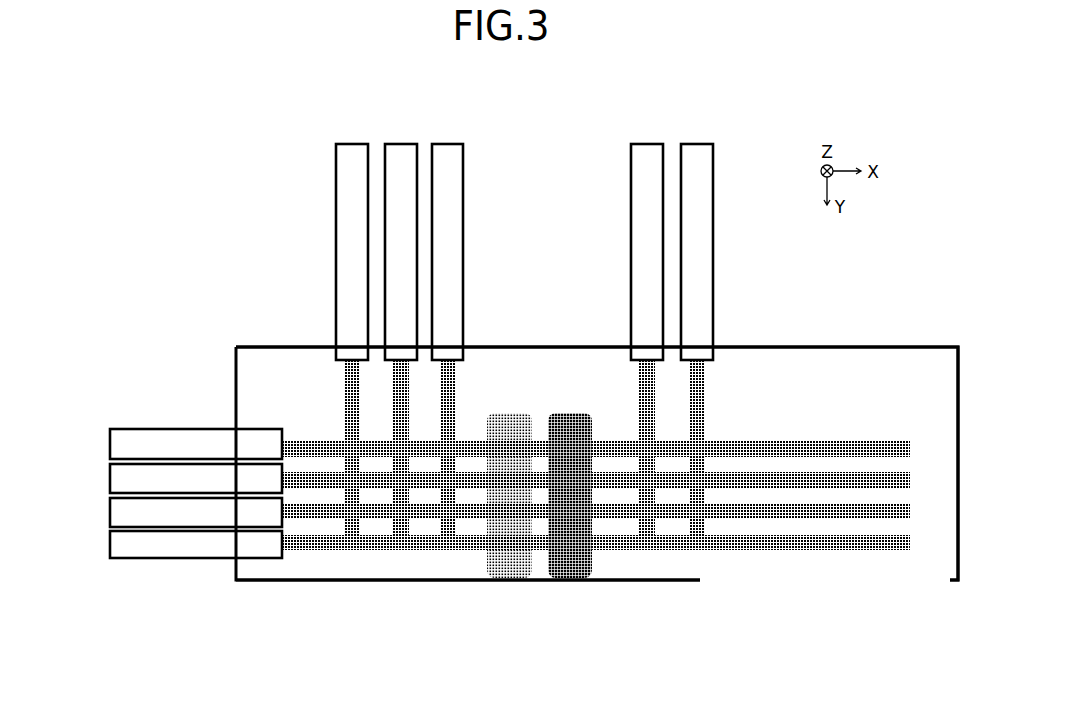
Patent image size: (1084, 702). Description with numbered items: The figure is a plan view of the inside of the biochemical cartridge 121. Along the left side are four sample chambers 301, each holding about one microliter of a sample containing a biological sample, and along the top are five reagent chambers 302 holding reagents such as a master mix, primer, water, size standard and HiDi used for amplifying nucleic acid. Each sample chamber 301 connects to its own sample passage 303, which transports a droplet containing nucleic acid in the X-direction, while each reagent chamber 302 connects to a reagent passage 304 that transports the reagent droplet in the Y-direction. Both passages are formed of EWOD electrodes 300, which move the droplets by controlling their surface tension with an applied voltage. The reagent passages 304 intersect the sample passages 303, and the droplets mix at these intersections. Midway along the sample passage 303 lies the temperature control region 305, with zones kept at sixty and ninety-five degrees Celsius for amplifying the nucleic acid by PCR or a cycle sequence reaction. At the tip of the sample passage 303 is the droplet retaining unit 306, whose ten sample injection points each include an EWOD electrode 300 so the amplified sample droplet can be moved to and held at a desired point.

The biochemical cartridge 121 is at (248, 347).
The EWOD electrode 300 is at (290, 547).
The sample chamber 301 is at (108, 429).
The reagent chamber 302 is at (715, 135).
The sample passage 303 is at (278, 438).
The reagent passage 304 is at (350, 368).
The temperature control region 305 is at (483, 620).
The droplet retaining unit 306 is at (910, 622).